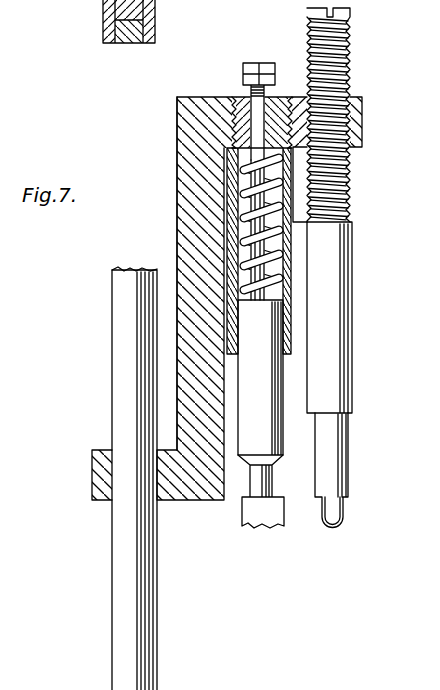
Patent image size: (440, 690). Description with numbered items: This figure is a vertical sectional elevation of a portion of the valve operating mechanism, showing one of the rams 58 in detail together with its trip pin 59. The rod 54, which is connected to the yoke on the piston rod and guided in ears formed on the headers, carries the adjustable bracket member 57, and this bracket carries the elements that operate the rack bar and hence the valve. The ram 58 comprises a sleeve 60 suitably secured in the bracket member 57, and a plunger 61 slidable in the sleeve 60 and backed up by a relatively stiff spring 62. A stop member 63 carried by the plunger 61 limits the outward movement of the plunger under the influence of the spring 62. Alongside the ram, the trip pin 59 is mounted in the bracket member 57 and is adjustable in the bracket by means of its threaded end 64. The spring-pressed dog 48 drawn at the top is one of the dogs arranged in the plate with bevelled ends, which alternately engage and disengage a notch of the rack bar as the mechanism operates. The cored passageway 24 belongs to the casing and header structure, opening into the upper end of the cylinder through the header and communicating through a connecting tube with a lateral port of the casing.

The cored passageway 24 is at (439, 218).
The spring-pressed dog 48 is at (155, 3).
The rod 54 is at (116, 348).
The bracket member 57 is at (178, 255).
The ram 58 is at (293, 306).
The trip pin 59 is at (354, 364).
The sleeve 60 is at (232, 226).
The plunger 61 is at (284, 434).
The spring 62 is at (276, 229).
The stop member 63 is at (244, 79).
The threaded end 64 is at (352, 176).